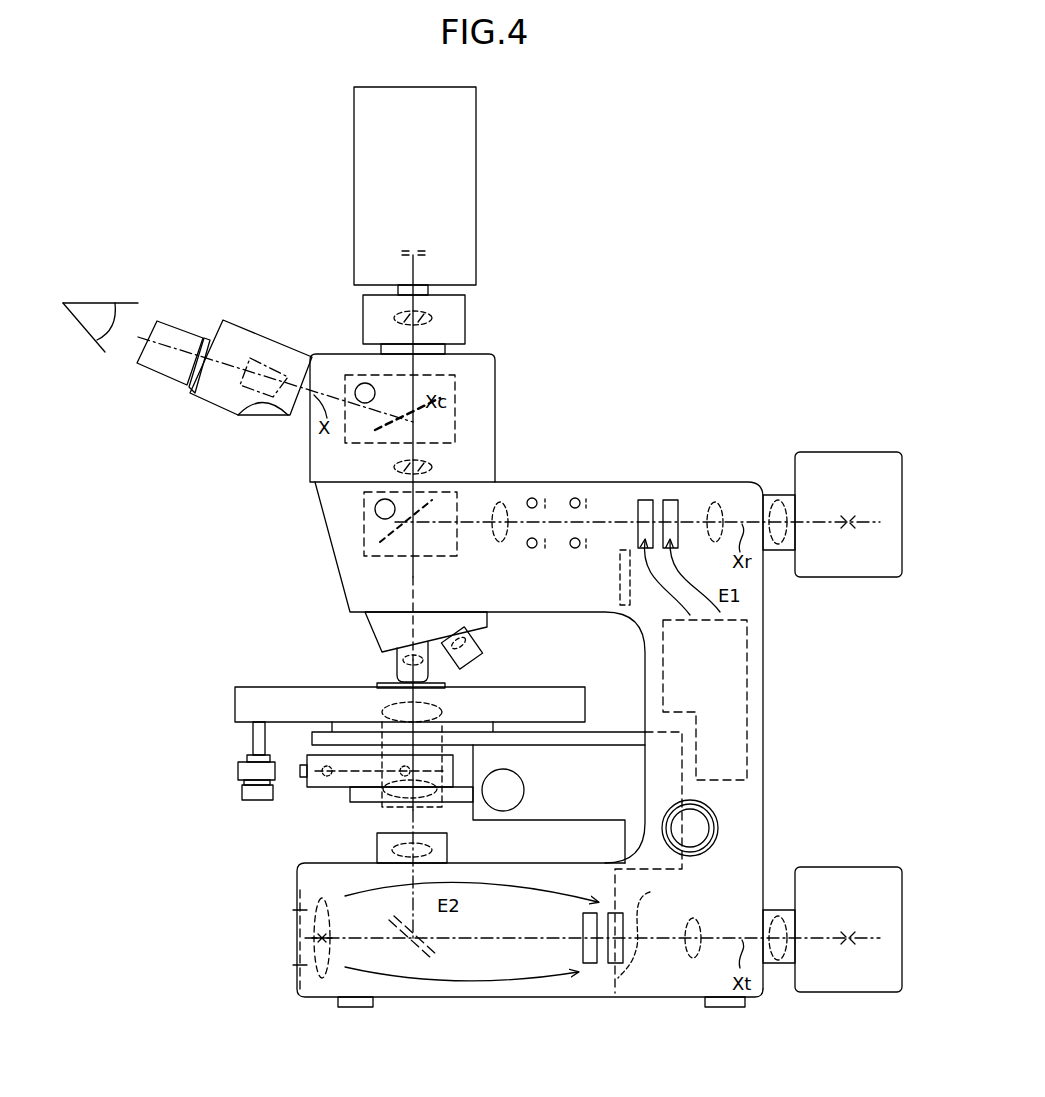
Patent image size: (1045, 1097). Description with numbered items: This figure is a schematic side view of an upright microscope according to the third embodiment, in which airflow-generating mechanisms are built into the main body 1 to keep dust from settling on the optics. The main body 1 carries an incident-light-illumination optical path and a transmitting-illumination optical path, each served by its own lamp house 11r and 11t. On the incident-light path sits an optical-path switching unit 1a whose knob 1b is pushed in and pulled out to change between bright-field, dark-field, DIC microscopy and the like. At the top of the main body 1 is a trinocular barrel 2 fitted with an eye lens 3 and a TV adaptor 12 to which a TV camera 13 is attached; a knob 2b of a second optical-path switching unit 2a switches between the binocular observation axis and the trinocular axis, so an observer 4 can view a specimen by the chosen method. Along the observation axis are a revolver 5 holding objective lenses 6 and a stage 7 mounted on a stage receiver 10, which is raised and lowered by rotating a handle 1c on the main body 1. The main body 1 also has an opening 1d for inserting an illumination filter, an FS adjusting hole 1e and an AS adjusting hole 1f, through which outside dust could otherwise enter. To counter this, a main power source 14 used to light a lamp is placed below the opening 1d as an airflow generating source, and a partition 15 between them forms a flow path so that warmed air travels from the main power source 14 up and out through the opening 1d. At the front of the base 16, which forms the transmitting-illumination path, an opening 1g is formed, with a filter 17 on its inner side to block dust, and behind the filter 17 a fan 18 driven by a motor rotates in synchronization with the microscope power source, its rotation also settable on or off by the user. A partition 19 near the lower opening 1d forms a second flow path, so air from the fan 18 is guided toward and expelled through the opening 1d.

The main body 1 is at (733, 482).
The optical-path switching unit 1a is at (364, 545).
The knob 1b is at (375, 509).
The handle 1c is at (719, 822).
The opening 1d is at (670, 499).
The FS adjusting hole 1e is at (532, 497).
The AS adjusting hole 1f is at (575, 497).
The opening 1g is at (296, 940).
The trinocular barrel 2 is at (497, 413).
The optical-path switching unit 2a is at (457, 383).
The knob 2b is at (365, 382).
The eye lens 3 is at (155, 372).
The observer 4 is at (97, 303).
The revolver 5 is at (365, 630).
The objective lenses 6 is at (397, 666).
The stage 7 is at (235, 706).
The stage receiver 10 is at (545, 822).
The lamp house 11r is at (848, 579).
The lamp house 11t is at (848, 994).
The TV adaptor 12 is at (467, 322).
The TV camera 13 is at (478, 238).
The main power source 14 is at (749, 672).
The partition 15 is at (619, 585).
The base 16 is at (440, 998).
The filter 17 is at (300, 972).
The fan 18 is at (330, 965).
The partition 19 is at (652, 892).